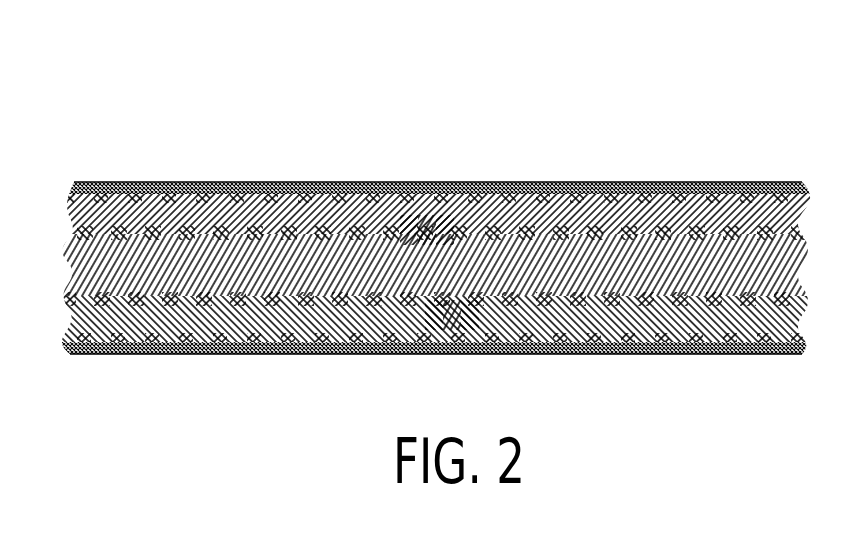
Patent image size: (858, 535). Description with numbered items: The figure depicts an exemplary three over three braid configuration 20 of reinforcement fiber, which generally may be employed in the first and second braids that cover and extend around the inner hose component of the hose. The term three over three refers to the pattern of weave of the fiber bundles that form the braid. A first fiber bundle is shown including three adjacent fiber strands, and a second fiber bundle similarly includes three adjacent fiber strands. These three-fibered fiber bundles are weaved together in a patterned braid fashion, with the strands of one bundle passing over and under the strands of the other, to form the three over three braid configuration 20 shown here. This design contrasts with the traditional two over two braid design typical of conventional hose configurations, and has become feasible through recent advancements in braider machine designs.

The 3 over 3 braid configuration 20 is at (435, 191).